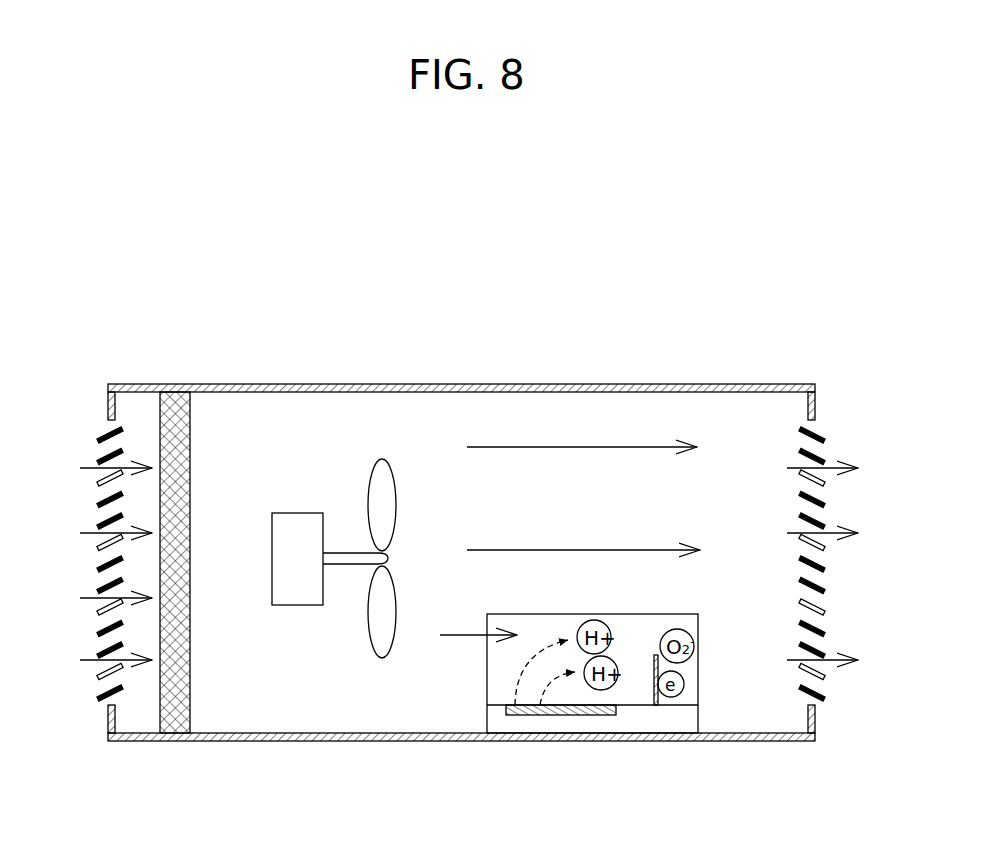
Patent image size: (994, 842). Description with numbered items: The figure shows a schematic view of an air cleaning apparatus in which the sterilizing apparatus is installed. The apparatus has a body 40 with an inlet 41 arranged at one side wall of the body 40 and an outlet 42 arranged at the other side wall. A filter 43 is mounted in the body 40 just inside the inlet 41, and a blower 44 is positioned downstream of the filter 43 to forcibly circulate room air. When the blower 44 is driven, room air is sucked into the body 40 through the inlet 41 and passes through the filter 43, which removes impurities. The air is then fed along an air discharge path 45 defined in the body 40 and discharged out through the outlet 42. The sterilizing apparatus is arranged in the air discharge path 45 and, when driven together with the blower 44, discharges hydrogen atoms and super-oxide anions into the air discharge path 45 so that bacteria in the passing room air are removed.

The body 40 is at (494, 386).
The inlet 41 is at (108, 449).
The outlet 42 is at (812, 443).
The filter 43 is at (191, 447).
The blower 44 is at (322, 502).
The air discharge path 45 is at (526, 514).